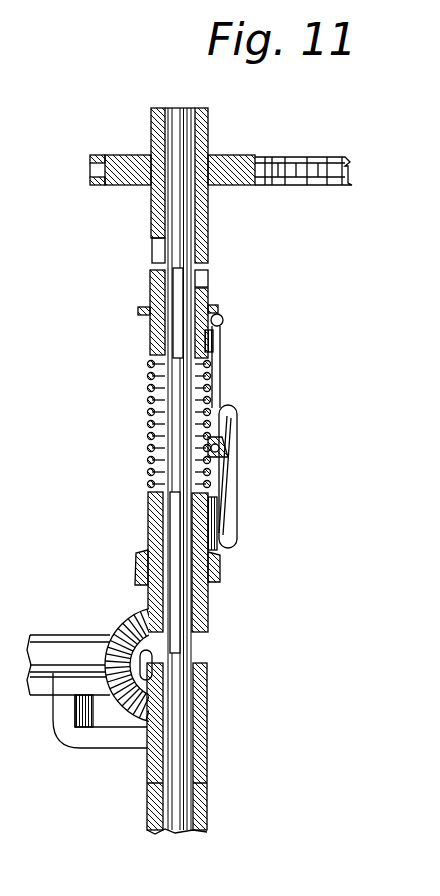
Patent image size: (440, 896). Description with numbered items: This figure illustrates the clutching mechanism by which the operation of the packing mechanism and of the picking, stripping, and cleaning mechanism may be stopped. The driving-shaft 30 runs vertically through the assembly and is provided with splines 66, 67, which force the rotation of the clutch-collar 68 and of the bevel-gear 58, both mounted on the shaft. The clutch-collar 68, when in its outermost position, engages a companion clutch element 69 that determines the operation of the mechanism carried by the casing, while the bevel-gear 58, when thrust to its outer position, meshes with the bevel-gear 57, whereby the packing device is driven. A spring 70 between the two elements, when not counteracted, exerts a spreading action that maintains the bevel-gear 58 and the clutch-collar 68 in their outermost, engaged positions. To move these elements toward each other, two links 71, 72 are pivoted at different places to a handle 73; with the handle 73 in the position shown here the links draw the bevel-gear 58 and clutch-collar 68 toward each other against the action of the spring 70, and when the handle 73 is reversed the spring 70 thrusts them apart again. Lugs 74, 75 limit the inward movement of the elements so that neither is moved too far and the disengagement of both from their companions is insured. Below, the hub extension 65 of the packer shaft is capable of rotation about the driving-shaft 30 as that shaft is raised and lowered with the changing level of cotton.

The driving-shaft 30 is at (183, 109).
The companion clutch element 69 is at (208, 223).
The spline 66 is at (195, 283).
The clutch-collar 68 is at (210, 307).
The lug 74 is at (198, 358).
The link 71 is at (221, 387).
The spring 70 is at (148, 388).
The handle 73 is at (235, 445).
The lug 75 is at (200, 488).
The link 72 is at (222, 503).
The bevel-gear 58 is at (213, 563).
The spline 67 is at (173, 623).
The bevel-gear 57 is at (133, 617).
The hub extension 65 is at (207, 743).